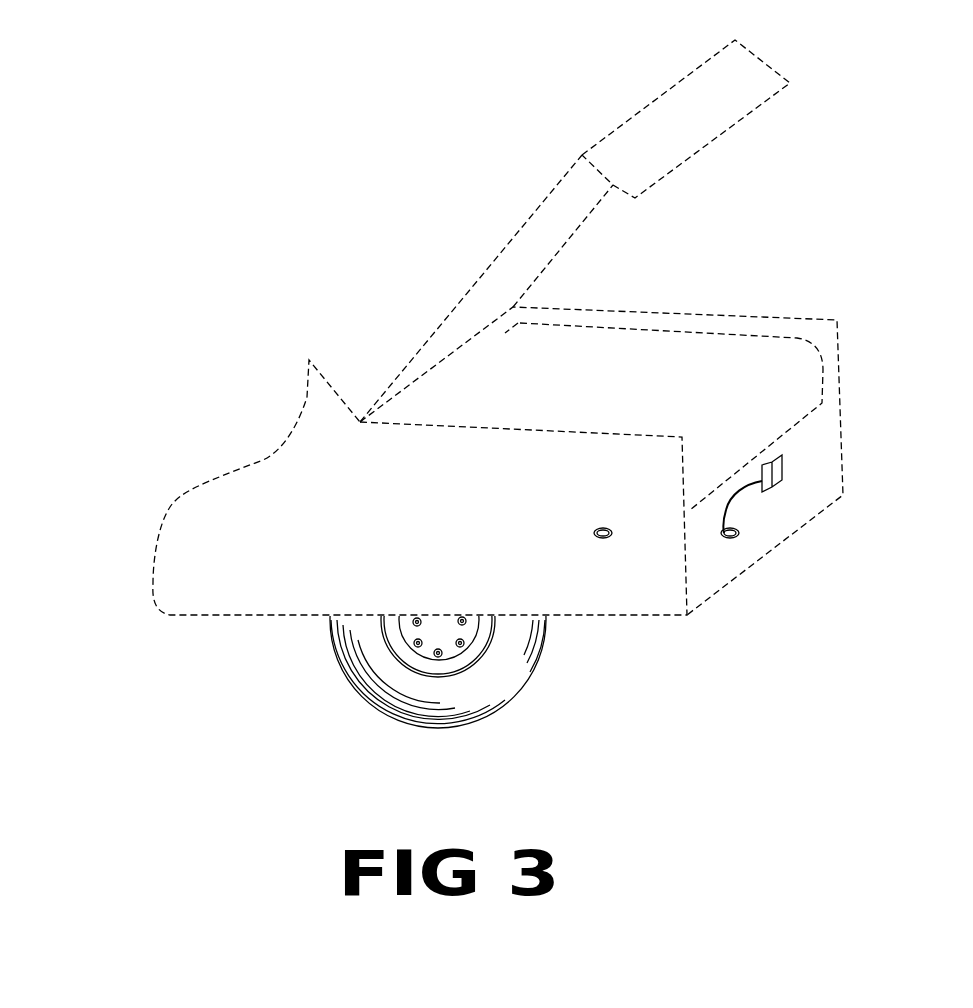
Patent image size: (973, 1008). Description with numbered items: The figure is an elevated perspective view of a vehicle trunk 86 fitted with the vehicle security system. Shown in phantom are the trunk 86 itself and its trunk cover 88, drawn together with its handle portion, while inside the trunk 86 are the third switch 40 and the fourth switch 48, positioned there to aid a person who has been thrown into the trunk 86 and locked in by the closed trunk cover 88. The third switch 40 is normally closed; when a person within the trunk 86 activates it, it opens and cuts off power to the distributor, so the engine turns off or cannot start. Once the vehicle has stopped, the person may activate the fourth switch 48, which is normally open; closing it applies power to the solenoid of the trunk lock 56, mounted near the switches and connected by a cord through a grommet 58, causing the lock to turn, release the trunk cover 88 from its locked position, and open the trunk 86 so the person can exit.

The third switch 40 is at (603, 527).
The fourth switch 48 is at (740, 525).
The trunk lock 56 is at (780, 462).
The grommet 58 is at (723, 508).
The trunk 86 is at (786, 265).
The trunk cover 88 is at (722, 115).